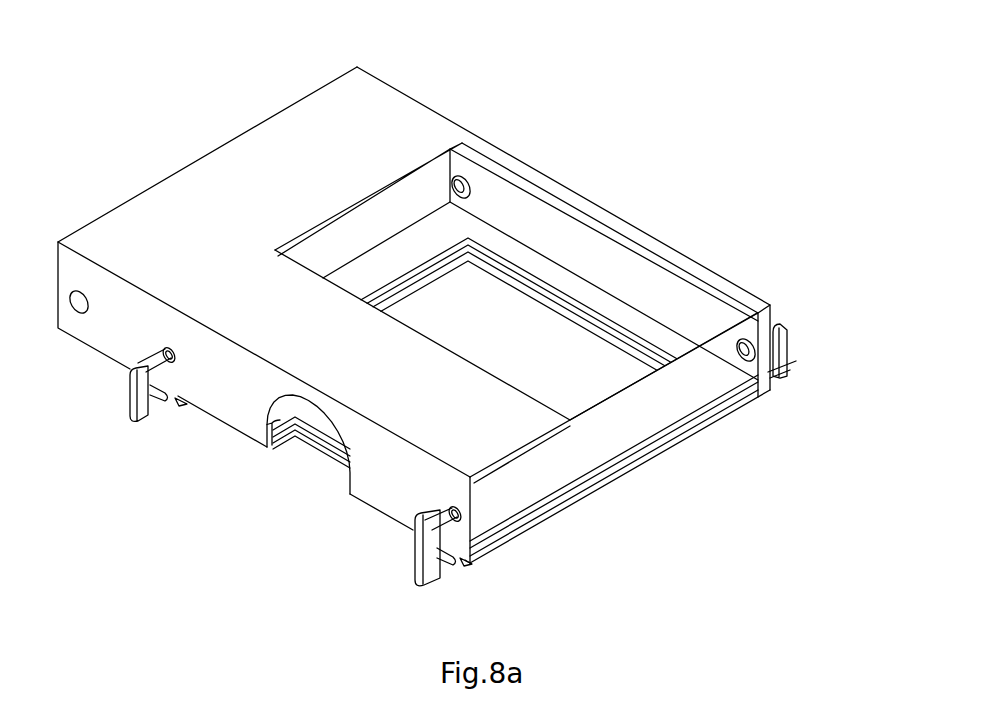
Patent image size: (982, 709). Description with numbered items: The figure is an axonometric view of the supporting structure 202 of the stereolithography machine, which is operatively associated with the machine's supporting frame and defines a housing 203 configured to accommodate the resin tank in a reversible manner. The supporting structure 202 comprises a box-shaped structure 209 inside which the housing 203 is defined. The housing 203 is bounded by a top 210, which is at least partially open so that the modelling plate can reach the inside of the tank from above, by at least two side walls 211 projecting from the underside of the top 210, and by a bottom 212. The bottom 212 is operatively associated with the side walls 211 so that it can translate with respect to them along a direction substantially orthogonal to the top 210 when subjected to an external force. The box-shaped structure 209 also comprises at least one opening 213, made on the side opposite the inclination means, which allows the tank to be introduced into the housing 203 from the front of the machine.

The box-shaped structure 209 is at (279, 81).
The top 210 is at (373, 145).
The side walls 211 is at (593, 250).
The supporting structure 202 is at (662, 138).
The housing 203 is at (659, 294).
The bottom 212 is at (518, 495).
The opening 213 is at (716, 450).